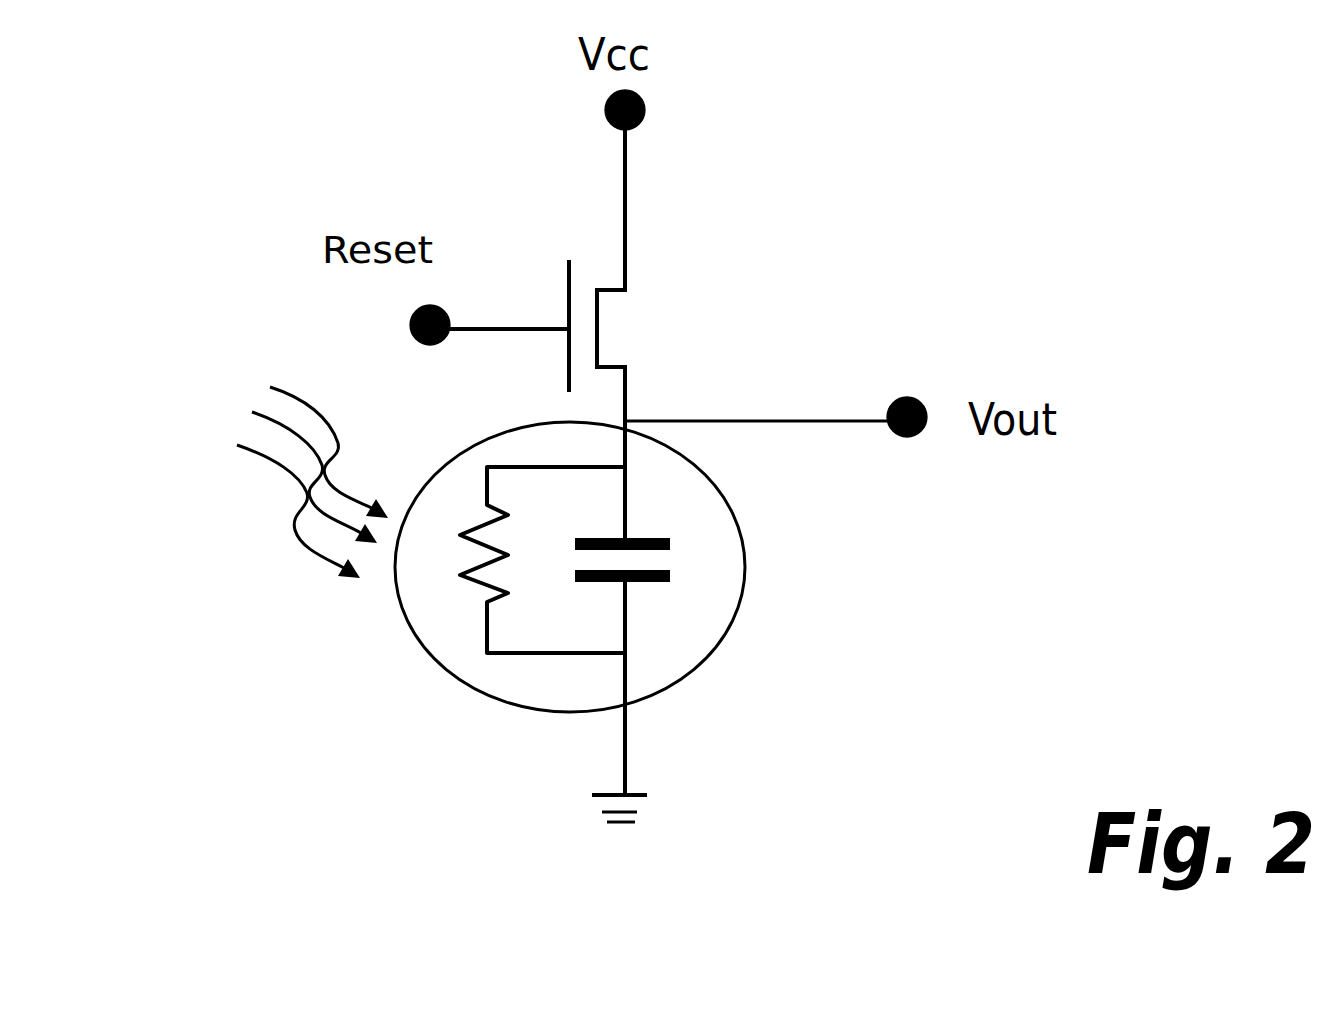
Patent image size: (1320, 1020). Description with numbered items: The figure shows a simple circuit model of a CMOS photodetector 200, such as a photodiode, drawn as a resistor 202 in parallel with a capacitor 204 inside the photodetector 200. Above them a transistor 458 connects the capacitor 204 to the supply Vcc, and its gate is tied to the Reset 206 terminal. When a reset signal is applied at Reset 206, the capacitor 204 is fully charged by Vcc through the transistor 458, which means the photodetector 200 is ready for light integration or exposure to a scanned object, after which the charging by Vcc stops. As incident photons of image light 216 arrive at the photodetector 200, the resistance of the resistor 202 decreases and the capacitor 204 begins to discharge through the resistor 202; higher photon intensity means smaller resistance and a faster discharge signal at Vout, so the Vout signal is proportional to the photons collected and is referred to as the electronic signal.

The CMOS photodetector 200 is at (688, 653).
The resistor 202 is at (467, 597).
The capacitor 204 is at (680, 552).
The Reset 206 is at (405, 328).
The incident light 216 is at (275, 478).
The reset transistor 458 is at (623, 327).